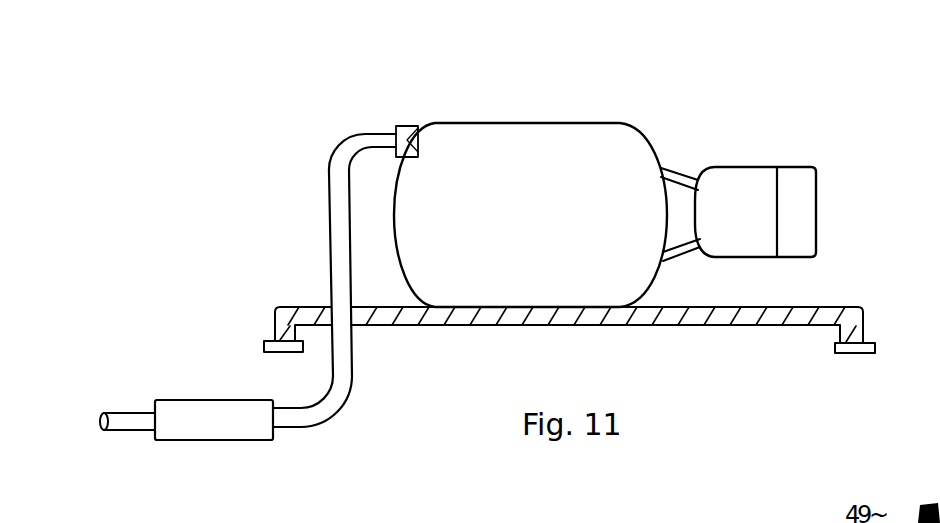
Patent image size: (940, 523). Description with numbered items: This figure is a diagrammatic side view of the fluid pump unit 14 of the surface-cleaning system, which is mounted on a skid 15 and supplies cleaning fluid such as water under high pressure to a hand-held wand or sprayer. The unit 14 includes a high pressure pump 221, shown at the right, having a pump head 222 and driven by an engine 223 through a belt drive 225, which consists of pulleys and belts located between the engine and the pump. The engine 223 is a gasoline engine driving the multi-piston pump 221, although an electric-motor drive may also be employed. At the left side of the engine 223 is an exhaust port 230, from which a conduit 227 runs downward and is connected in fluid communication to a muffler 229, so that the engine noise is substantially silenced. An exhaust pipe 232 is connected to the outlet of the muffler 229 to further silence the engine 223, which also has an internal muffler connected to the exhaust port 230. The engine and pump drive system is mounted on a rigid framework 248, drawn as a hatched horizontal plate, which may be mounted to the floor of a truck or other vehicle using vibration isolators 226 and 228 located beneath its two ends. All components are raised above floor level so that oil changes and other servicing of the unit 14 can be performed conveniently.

The engine 223 is at (554, 114).
The exhaust port 230 is at (400, 126).
The belt drive 225 is at (686, 178).
The high pressure pump 221 is at (738, 157).
The pump head 222 is at (802, 156).
The rigid framework 248 is at (770, 307).
The skid 15 is at (675, 336).
The vibration isolator 226 is at (270, 346).
The vibration isolator 228 is at (836, 347).
The conduit 227 is at (362, 367).
The muffler 229 is at (220, 447).
The exhaust pipe 232 is at (139, 412).
The fluid pump unit 14 is at (468, 433).